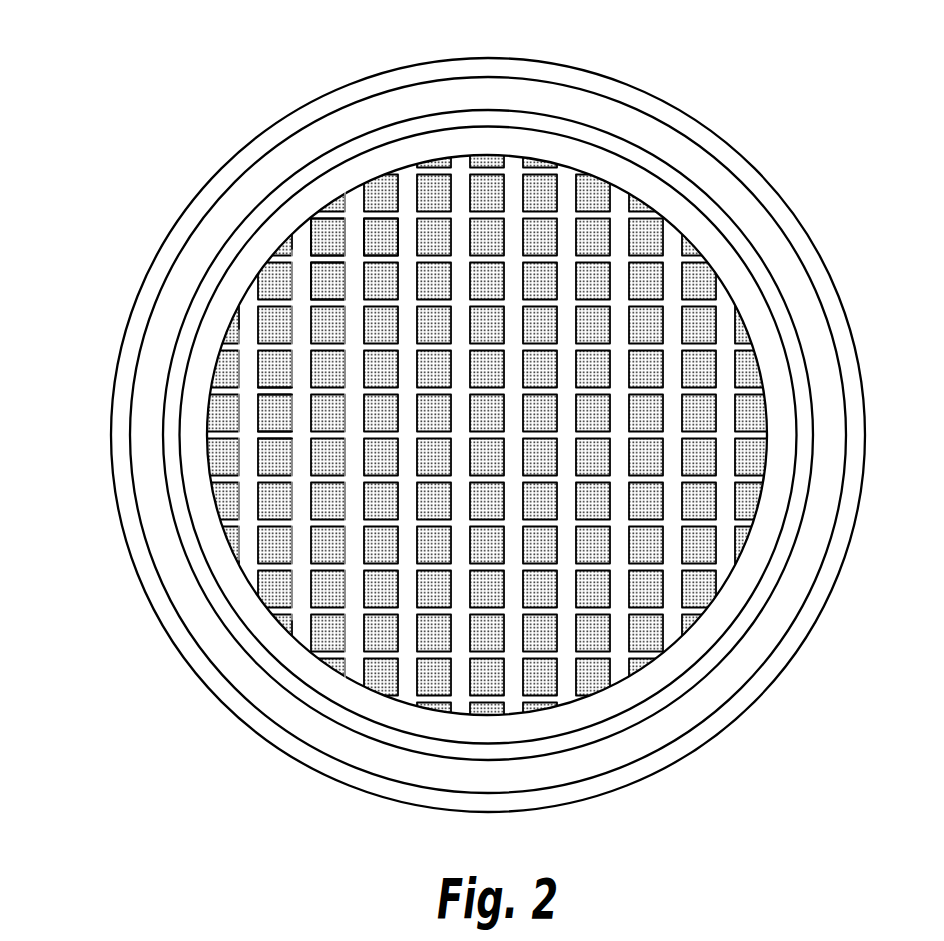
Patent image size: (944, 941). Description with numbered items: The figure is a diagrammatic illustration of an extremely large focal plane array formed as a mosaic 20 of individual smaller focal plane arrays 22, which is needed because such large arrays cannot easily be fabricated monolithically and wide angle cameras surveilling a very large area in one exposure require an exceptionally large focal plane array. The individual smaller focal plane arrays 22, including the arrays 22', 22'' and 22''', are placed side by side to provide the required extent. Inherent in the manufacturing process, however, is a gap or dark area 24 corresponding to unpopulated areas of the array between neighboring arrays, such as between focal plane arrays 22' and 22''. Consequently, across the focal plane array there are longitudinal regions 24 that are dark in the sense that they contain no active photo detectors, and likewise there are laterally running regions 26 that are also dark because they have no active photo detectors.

The mosaic 20 is at (606, 168).
The focal plane array 22 is at (487, 370).
The focal plane array 22' is at (261, 182).
The focal plane array 22'' is at (229, 235).
The filter element 22''' is at (486, 138).
The gap or dark area 24 is at (353, 262).
The laterally running region 26 is at (275, 392).